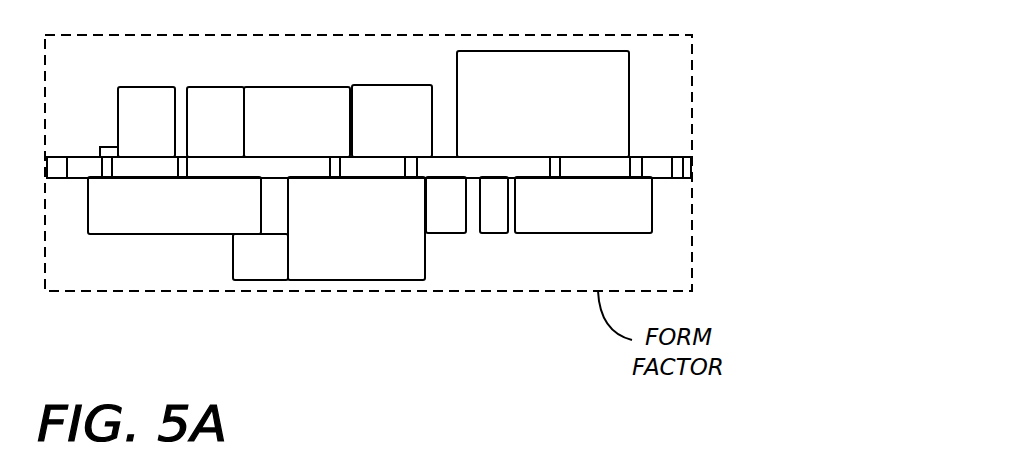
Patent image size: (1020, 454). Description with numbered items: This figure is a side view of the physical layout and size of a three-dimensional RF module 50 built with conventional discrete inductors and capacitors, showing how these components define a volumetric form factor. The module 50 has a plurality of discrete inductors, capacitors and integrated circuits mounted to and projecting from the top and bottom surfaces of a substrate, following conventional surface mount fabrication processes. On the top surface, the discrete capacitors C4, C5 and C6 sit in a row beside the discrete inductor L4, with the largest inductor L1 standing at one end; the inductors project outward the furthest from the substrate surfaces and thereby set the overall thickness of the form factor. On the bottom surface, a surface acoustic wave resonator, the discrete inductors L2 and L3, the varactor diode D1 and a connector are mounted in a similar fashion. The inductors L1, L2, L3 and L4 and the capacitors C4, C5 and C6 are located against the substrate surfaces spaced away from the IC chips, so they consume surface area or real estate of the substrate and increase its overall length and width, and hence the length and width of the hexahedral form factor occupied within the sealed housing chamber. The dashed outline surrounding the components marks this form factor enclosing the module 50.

The RF module 50 is at (55, 352).
The discrete capacitor C4 is at (146, 122).
The discrete inductor L4 is at (215, 122).
The discrete capacitor C5 is at (297, 122).
The discrete capacitor C6 is at (392, 121).
The discrete inductor L1 is at (543, 104).
The discrete inductor L2 is at (356, 228).
The discrete inductor L3 is at (260, 257).
The varactor diode D1 is at (446, 205).